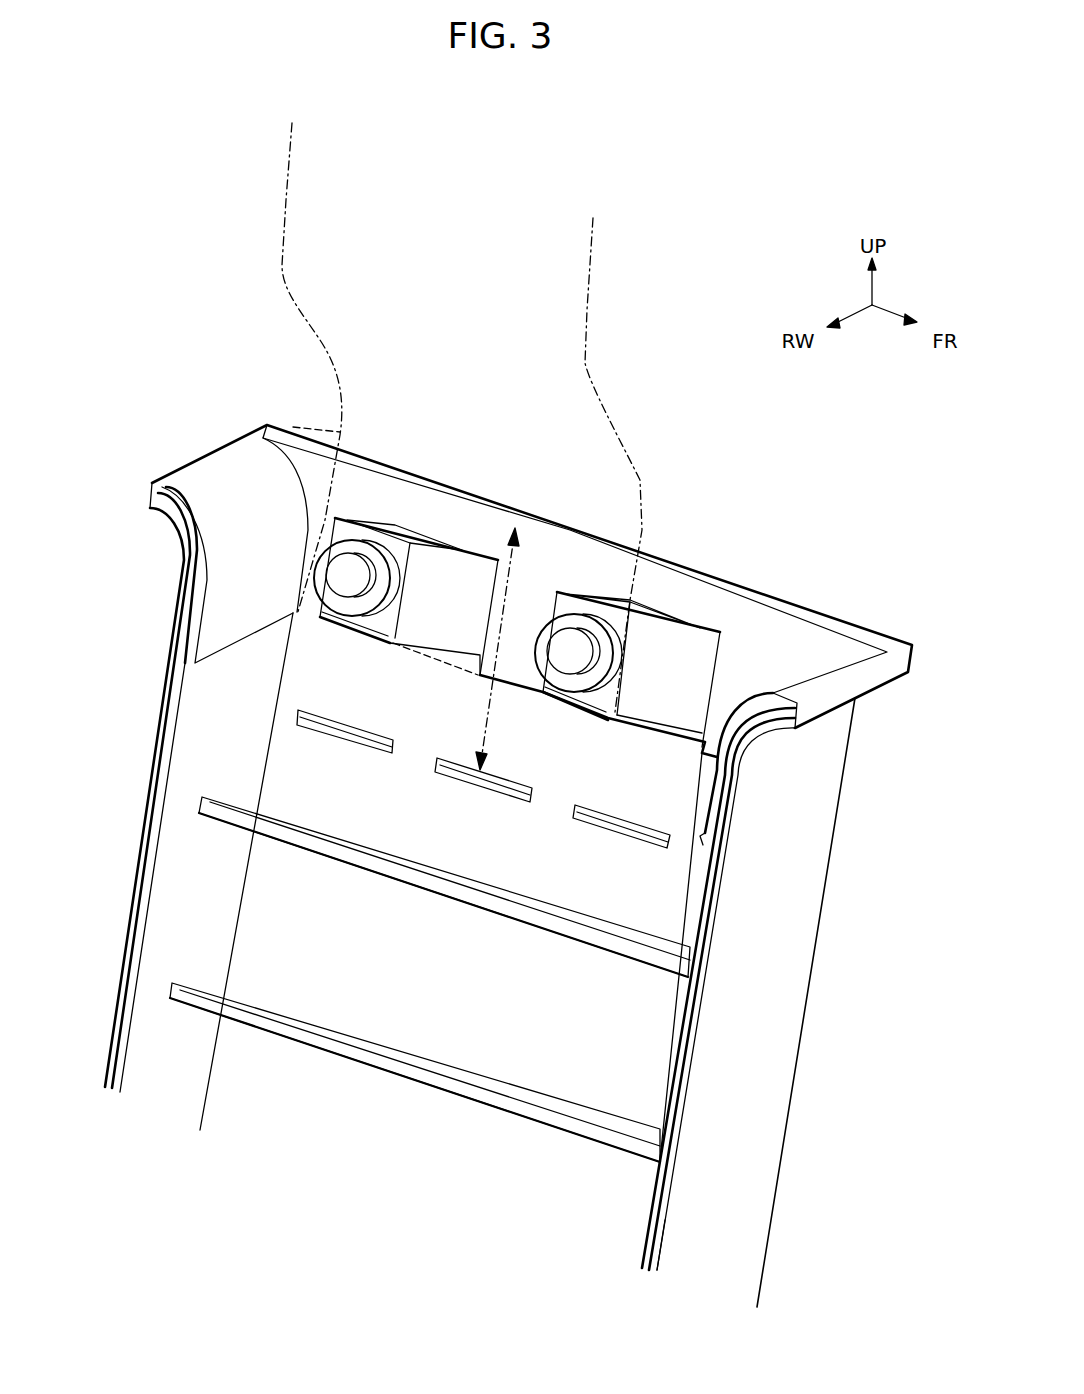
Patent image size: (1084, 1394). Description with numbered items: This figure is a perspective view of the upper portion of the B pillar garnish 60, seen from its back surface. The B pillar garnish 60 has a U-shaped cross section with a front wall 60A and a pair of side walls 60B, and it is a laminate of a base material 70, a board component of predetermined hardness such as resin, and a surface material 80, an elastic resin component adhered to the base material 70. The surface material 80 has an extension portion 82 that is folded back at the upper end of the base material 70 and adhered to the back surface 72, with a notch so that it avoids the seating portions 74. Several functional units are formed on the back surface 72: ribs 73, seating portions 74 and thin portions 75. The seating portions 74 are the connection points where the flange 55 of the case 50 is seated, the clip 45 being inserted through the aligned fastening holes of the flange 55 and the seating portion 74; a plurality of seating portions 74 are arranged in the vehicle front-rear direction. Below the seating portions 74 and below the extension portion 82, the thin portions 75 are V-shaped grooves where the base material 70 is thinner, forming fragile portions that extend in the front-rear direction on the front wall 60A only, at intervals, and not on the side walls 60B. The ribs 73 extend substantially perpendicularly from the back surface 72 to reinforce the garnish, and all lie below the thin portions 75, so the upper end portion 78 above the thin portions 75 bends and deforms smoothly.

The clip 45 is at (337, 577).
The case 50 is at (287, 198).
The flange 55 is at (293, 427).
The B pillar garnish 60 is at (823, 1075).
The front wall 60A is at (270, 913).
The side wall 60B is at (193, 735).
The base material 70 is at (657, 1182).
The back surface 72 is at (668, 910).
The rib 73 is at (527, 923).
The seating portion 74 is at (440, 577).
The thin portion 75 is at (363, 742).
The upper end portion 78 is at (497, 649).
The surface material 80 is at (648, 1238).
The extension portion 82 is at (775, 645).